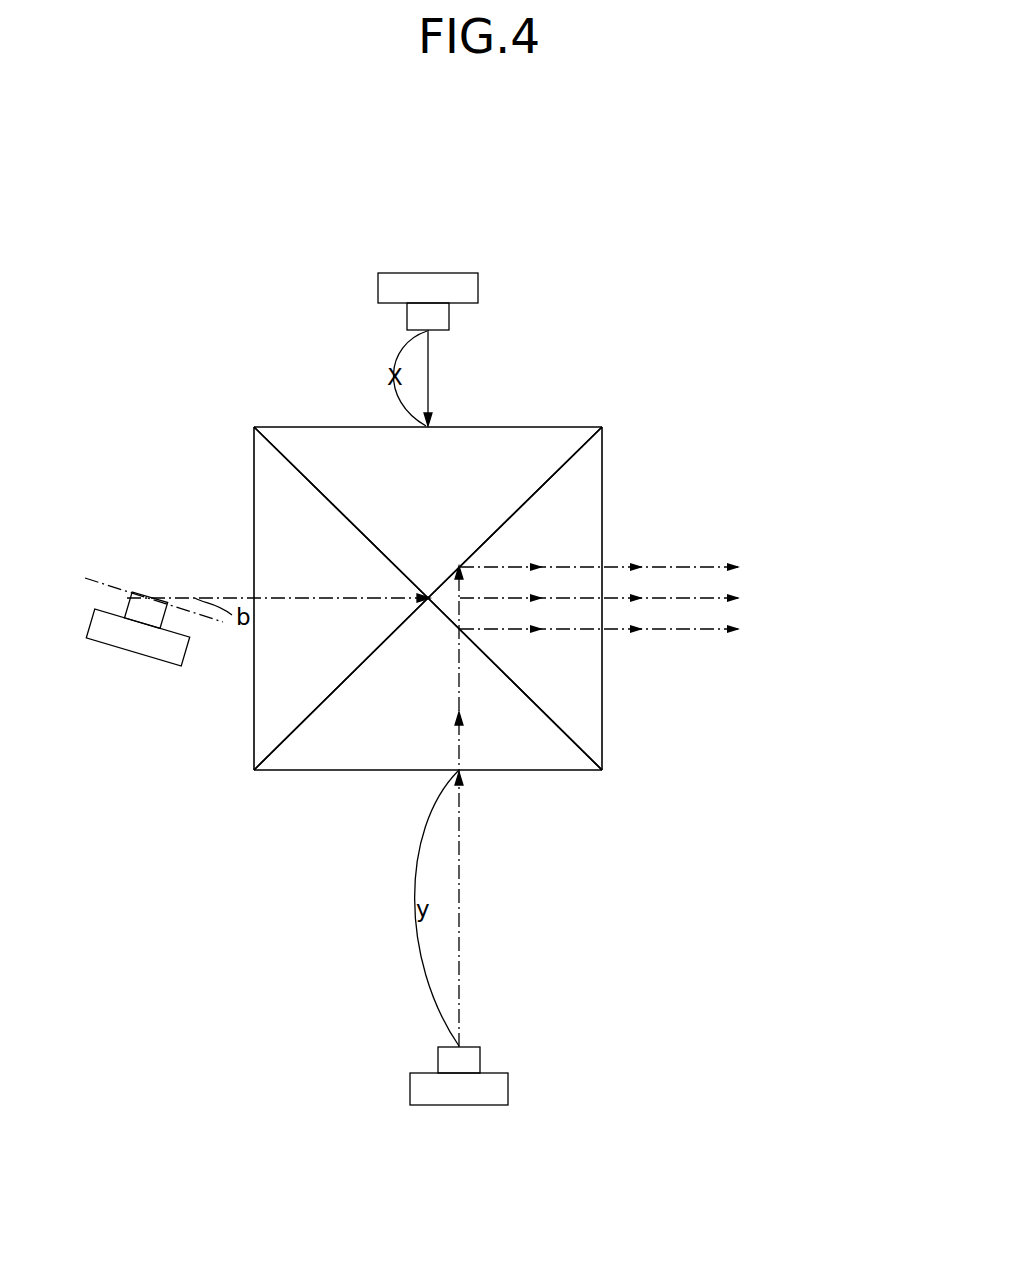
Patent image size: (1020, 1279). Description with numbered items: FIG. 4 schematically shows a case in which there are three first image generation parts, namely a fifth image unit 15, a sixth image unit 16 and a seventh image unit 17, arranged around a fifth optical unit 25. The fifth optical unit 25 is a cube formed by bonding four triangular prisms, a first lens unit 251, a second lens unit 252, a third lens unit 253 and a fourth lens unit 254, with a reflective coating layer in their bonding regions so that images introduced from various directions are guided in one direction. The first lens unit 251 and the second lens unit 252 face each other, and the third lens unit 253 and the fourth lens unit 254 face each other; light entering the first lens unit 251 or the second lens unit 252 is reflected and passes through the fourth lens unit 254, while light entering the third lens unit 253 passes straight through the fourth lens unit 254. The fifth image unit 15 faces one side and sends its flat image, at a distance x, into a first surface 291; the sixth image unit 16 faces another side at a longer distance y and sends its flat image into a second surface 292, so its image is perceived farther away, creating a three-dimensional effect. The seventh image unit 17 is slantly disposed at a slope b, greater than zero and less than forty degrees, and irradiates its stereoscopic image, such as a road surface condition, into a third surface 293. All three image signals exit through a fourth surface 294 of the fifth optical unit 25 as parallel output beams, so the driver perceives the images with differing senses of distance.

The fifth image unit 15 is at (390, 292).
The sixth image unit 16 is at (423, 1087).
The seventh image unit 17 is at (137, 640).
The fifth optical unit 25 is at (539, 597).
The first lens unit 251 is at (545, 445).
The second lens unit 252 is at (520, 722).
The third lens unit 253 is at (300, 515).
The fourth lens unit 254 is at (587, 530).
The first surface 291 is at (523, 427).
The second surface 292 is at (290, 773).
The third surface 293 is at (253, 717).
The fourth surface 294 is at (602, 717).